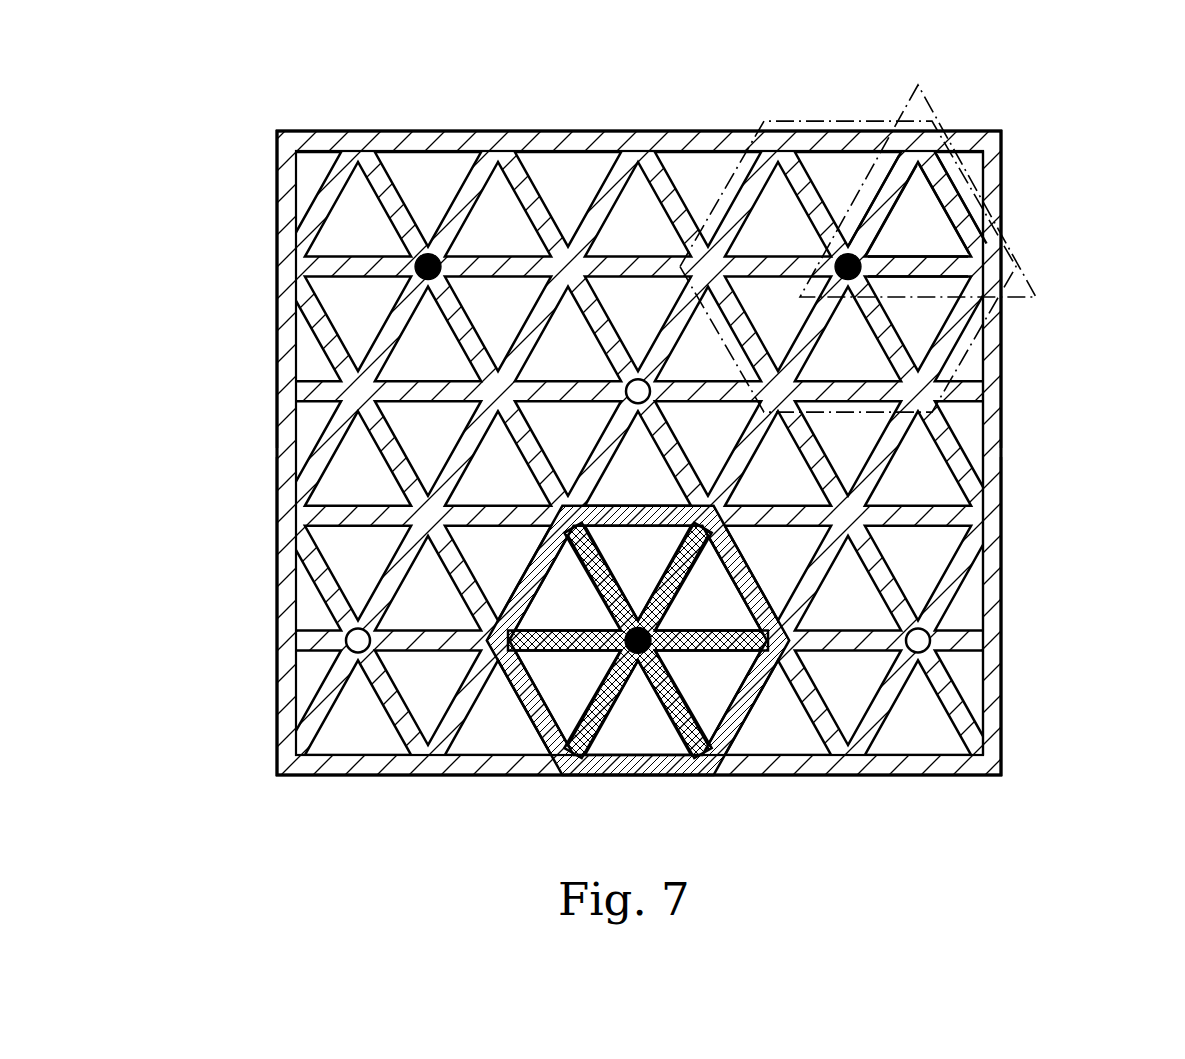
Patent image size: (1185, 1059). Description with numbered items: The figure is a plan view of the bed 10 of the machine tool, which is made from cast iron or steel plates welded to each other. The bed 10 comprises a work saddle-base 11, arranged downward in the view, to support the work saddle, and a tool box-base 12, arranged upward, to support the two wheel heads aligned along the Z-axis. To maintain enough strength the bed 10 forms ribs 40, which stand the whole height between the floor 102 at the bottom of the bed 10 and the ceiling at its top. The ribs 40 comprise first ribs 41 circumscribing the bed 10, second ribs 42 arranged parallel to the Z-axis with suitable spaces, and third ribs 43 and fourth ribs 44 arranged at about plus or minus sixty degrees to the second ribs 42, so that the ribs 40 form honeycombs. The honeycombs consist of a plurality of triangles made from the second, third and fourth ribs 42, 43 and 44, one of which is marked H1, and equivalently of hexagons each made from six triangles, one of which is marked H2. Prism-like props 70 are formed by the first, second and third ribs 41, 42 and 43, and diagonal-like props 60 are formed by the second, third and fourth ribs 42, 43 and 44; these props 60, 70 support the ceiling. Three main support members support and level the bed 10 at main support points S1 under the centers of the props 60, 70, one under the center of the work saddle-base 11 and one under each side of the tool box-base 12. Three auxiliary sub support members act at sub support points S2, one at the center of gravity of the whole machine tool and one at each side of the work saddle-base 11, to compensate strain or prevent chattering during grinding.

The bed 10 is at (1097, 208).
The work saddle-base 11 is at (253, 457).
The tool box-base 12 is at (253, 131).
The ribs 40 is at (1000, 442).
The first ribs 41 is at (990, 397).
The second ribs 42 is at (917, 260).
The third ribs 43 is at (973, 180).
The fourth ribs 44 is at (893, 181).
The diagonal-like props 60 is at (614, 720).
The prism-like props 70 is at (754, 722).
The floor 102 is at (576, 177).
The triangle of the honeycombs H1 is at (1027, 271).
The hexagon of the honeycombs H2 is at (987, 349).
The main support points S1 is at (416, 262).
The sub support points S2 is at (626, 385).